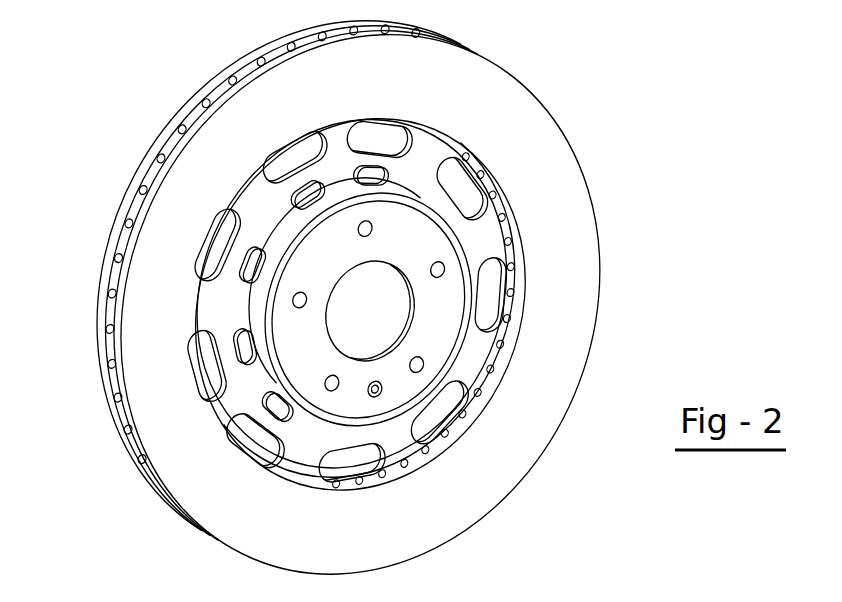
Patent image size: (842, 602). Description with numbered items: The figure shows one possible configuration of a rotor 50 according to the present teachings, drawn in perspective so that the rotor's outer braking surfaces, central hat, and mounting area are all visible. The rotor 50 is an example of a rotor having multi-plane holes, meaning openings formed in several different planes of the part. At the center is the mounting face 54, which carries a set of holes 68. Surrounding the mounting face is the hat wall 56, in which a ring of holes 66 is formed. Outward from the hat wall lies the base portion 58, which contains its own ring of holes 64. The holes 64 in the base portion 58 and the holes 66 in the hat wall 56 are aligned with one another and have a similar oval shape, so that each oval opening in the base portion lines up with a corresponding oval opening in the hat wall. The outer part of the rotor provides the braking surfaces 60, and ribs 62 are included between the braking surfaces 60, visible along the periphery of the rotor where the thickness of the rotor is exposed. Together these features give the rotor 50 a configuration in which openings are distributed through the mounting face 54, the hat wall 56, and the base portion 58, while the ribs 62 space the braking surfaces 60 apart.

The rotor 50 is at (574, 80).
The mounting face 54 is at (418, 243).
The hat wall 56 is at (230, 302).
The base portion 58 is at (478, 352).
The braking surfaces 60 is at (532, 146).
The ribs 62 is at (100, 364).
The holes 64 is at (380, 460).
The holes 66 is at (373, 170).
The holes 68 is at (440, 270).